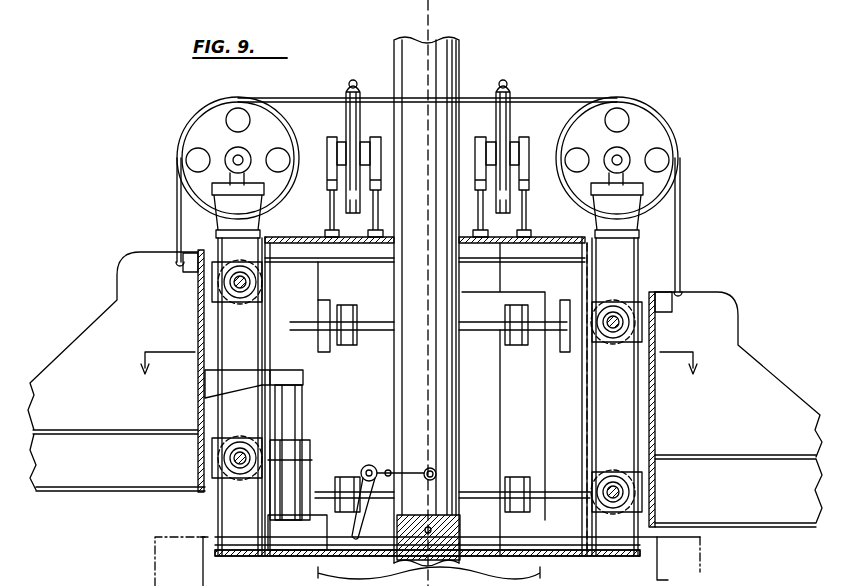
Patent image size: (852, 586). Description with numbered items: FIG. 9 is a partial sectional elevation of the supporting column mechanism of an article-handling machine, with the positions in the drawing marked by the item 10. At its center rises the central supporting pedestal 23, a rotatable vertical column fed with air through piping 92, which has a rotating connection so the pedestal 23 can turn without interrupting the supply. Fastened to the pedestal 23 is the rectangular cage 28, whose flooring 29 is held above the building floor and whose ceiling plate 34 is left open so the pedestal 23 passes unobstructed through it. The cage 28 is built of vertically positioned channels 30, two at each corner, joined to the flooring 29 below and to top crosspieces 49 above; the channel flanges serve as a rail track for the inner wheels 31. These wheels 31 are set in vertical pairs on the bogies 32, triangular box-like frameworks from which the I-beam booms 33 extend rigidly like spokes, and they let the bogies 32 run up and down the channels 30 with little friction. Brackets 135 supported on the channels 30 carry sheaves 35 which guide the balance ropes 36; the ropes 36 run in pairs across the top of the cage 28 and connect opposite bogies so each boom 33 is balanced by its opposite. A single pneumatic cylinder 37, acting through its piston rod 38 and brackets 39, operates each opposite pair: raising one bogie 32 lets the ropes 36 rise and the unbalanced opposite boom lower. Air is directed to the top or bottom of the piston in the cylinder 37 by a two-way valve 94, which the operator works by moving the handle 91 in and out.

The car body 10 is at (419, 375).
The central supporting pedestal 23 is at (460, 72).
The rectangular cage 28 is at (494, 420).
The flooring 29 is at (580, 568).
The channels 30 is at (252, 415).
The inner wheels 31 is at (268, 314).
The bogies 32 is at (190, 254).
The I-beam booms 33 is at (88, 480).
The ceiling plate 34 is at (272, 245).
The sheaves 35 is at (346, 122).
The balance ropes 36 is at (350, 82).
The cylinder 37 is at (310, 452).
The piston rod 38 is at (302, 408).
The brackets 39 is at (256, 370).
The top crosspieces 49 is at (256, 230).
The handle 91 is at (203, 572).
The piping 92 is at (432, 34).
The two-way valve 94 is at (369, 465).
The brackets 135 is at (327, 172).